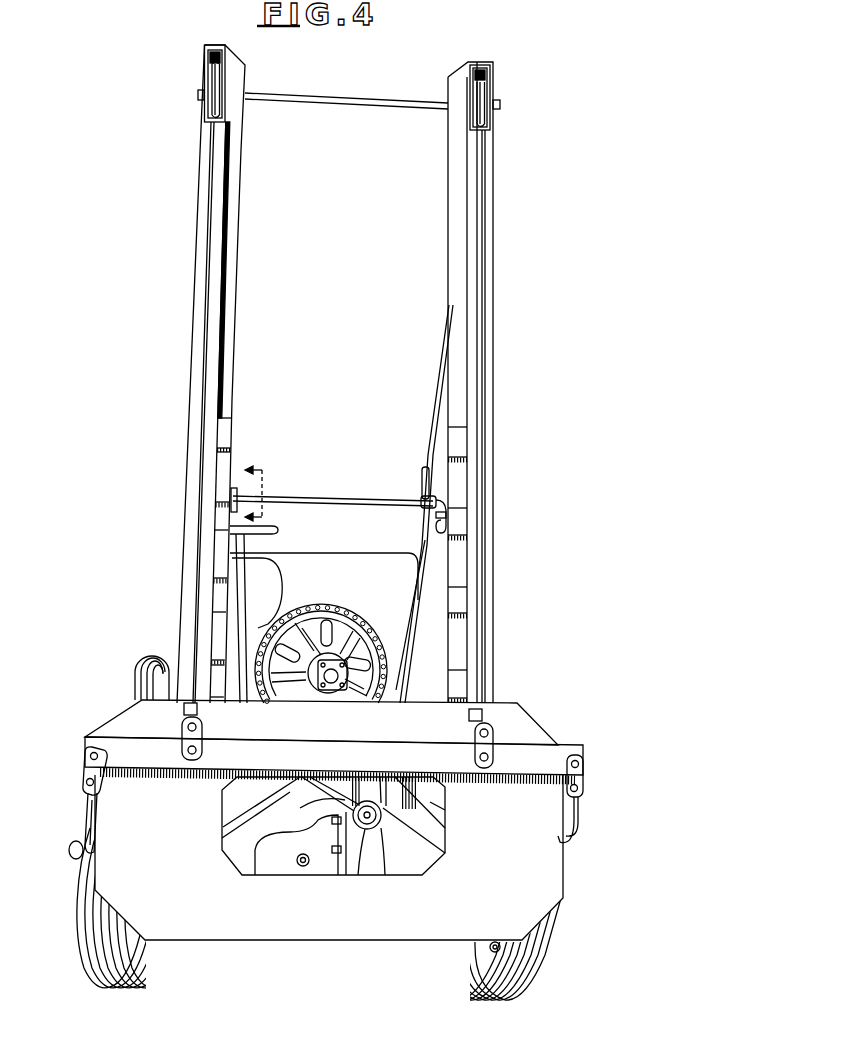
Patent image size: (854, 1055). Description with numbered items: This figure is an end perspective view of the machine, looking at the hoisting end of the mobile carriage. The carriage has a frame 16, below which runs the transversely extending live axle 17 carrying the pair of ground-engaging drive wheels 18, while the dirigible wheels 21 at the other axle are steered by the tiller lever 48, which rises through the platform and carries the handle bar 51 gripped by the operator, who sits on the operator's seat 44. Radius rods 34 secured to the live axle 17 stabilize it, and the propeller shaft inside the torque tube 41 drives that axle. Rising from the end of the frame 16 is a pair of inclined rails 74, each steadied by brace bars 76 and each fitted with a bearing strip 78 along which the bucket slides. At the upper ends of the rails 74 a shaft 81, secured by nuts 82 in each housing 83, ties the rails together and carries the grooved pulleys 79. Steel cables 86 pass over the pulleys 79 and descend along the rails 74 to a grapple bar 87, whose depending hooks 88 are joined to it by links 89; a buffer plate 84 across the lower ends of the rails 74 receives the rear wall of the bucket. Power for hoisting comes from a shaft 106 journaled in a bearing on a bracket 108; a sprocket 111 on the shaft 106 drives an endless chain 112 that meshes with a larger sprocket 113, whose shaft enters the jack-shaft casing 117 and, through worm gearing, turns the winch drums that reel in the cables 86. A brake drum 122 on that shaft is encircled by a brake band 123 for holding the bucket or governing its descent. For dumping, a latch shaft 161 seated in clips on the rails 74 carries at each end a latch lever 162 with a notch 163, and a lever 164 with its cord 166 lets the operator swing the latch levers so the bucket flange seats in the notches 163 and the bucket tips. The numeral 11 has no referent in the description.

The section line 11 is at (266, 494).
The frame 16 is at (438, 795).
The live axle 17 is at (271, 857).
The drive wheels 18 is at (100, 946).
The dirigible wheels 21 is at (138, 678).
The radius rods 34 is at (252, 795).
The torque tube 41 is at (300, 812).
The operator's seat 44 is at (272, 568).
The tiller lever 48 is at (238, 582).
The handle bar 51 is at (268, 534).
The inclined rails 74 is at (192, 340).
The brace bars 76 is at (436, 410).
The bearing strip 78 is at (218, 300).
The grooved pulleys 79 is at (219, 72).
The shaft 81 is at (370, 104).
The nuts 82 is at (199, 98).
The housing 83 is at (205, 57).
The buffer plate 84 is at (545, 873).
The steel cables 86 is at (212, 270).
The grapple bar 87 is at (558, 758).
The hooks 88 is at (86, 816).
The links 89 is at (85, 762).
The shaft 106 is at (370, 832).
The bracket 108 is at (350, 790).
The sprocket 111 is at (370, 802).
The endless chain 112 is at (356, 622).
The larger sprocket 113 is at (360, 646).
The jack-shaft casing 117 is at (330, 699).
The brake drum 122 is at (326, 640).
The brake band 123 is at (306, 628).
The latch shaft 161 is at (350, 504).
The latch lever 162 is at (235, 490).
The notch 163 is at (447, 527).
The lever 164 is at (429, 485).
The cord 166 is at (424, 582).